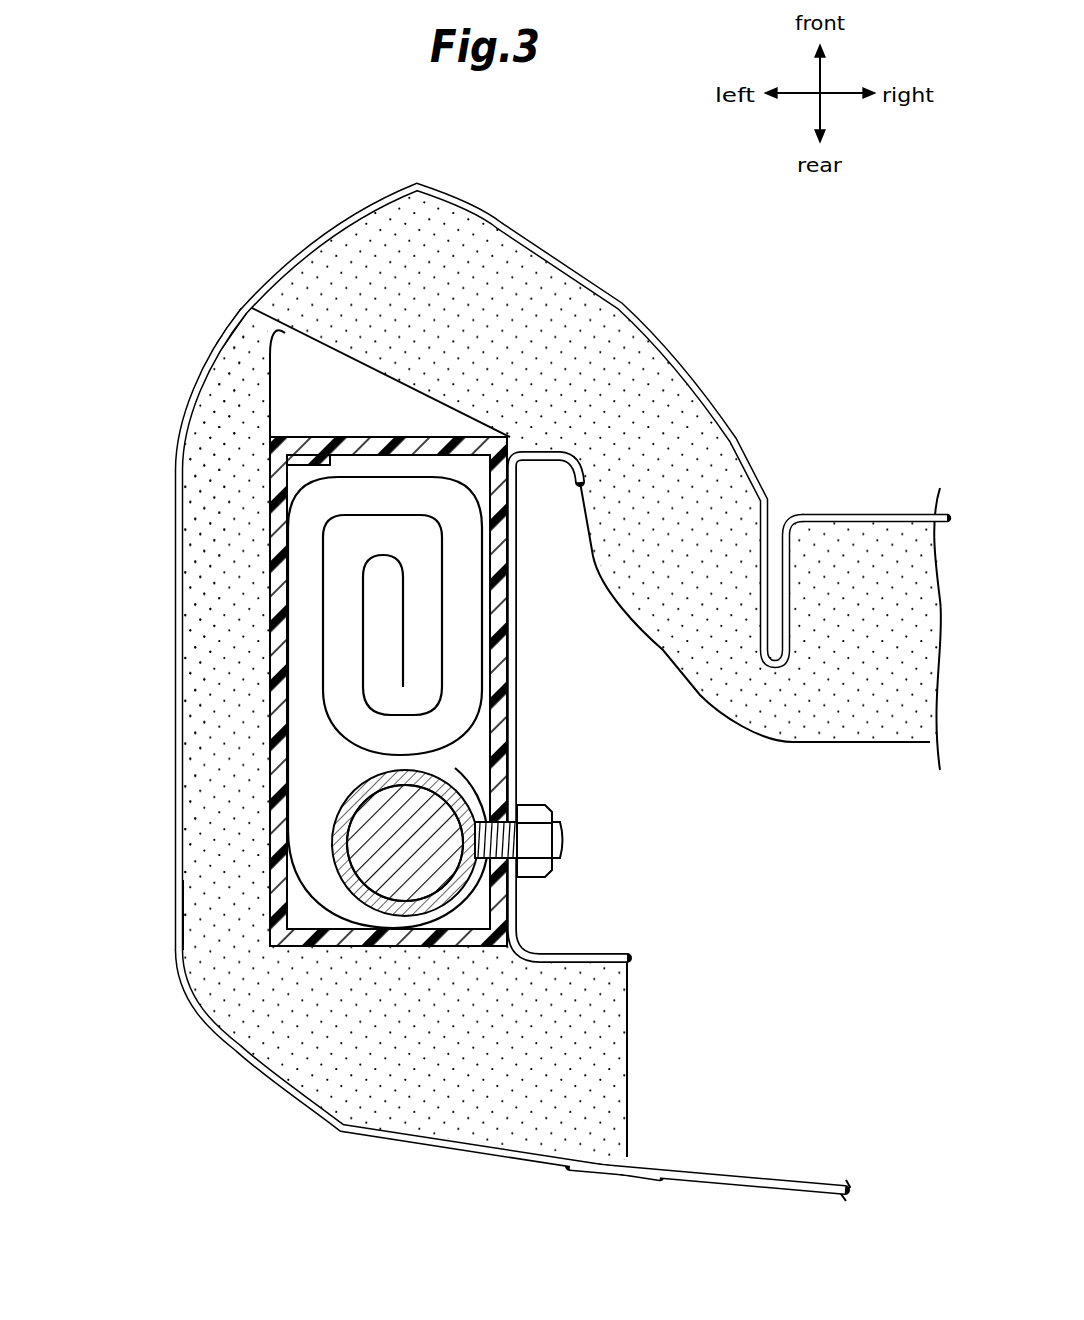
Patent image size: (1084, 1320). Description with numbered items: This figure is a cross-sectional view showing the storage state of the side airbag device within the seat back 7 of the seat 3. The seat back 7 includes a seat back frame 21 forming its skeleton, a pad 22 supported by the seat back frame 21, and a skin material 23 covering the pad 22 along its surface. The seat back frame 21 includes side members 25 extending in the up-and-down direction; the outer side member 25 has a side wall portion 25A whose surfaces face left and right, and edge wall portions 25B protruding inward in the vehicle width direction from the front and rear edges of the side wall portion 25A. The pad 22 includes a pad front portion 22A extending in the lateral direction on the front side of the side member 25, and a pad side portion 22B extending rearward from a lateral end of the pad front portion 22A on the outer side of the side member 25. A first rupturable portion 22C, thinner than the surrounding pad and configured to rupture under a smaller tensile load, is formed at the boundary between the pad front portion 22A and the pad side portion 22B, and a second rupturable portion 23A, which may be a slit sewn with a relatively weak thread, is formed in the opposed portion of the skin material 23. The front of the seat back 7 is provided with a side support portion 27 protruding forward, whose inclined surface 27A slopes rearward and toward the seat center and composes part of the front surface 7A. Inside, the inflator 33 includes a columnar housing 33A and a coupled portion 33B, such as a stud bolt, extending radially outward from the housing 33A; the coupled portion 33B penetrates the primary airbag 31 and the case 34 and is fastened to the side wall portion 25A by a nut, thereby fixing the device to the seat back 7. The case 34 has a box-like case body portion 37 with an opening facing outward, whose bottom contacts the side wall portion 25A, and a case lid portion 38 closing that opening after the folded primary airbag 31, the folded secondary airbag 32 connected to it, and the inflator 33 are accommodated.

The seat 3 is at (441, 1158).
The seat back 7 is at (256, 1083).
The front surface 7A is at (850, 512).
The seat back frame 21 is at (632, 957).
The pad 22 is at (726, 733).
The pad front portion 22A is at (847, 733).
The pad side portion 22B is at (197, 913).
The first rupturable portion 22C is at (283, 333).
The skin material 23 is at (176, 657).
The second rupturable portion 23A is at (240, 303).
The side member 25 is at (522, 684).
The side wall portion 25A is at (512, 733).
The edge wall portion 25B is at (537, 463).
The side support portion 27 is at (489, 243).
The inclined surface 27A is at (620, 308).
The primary airbag 31 is at (270, 702).
The secondary airbag 32 is at (300, 582).
The inflator 33 is at (322, 830).
The housing 33A is at (348, 793).
The coupled portion 33B is at (565, 833).
The case 34 is at (330, 958).
The case body portion 37 is at (447, 937).
The case lid portion 38 is at (277, 703).